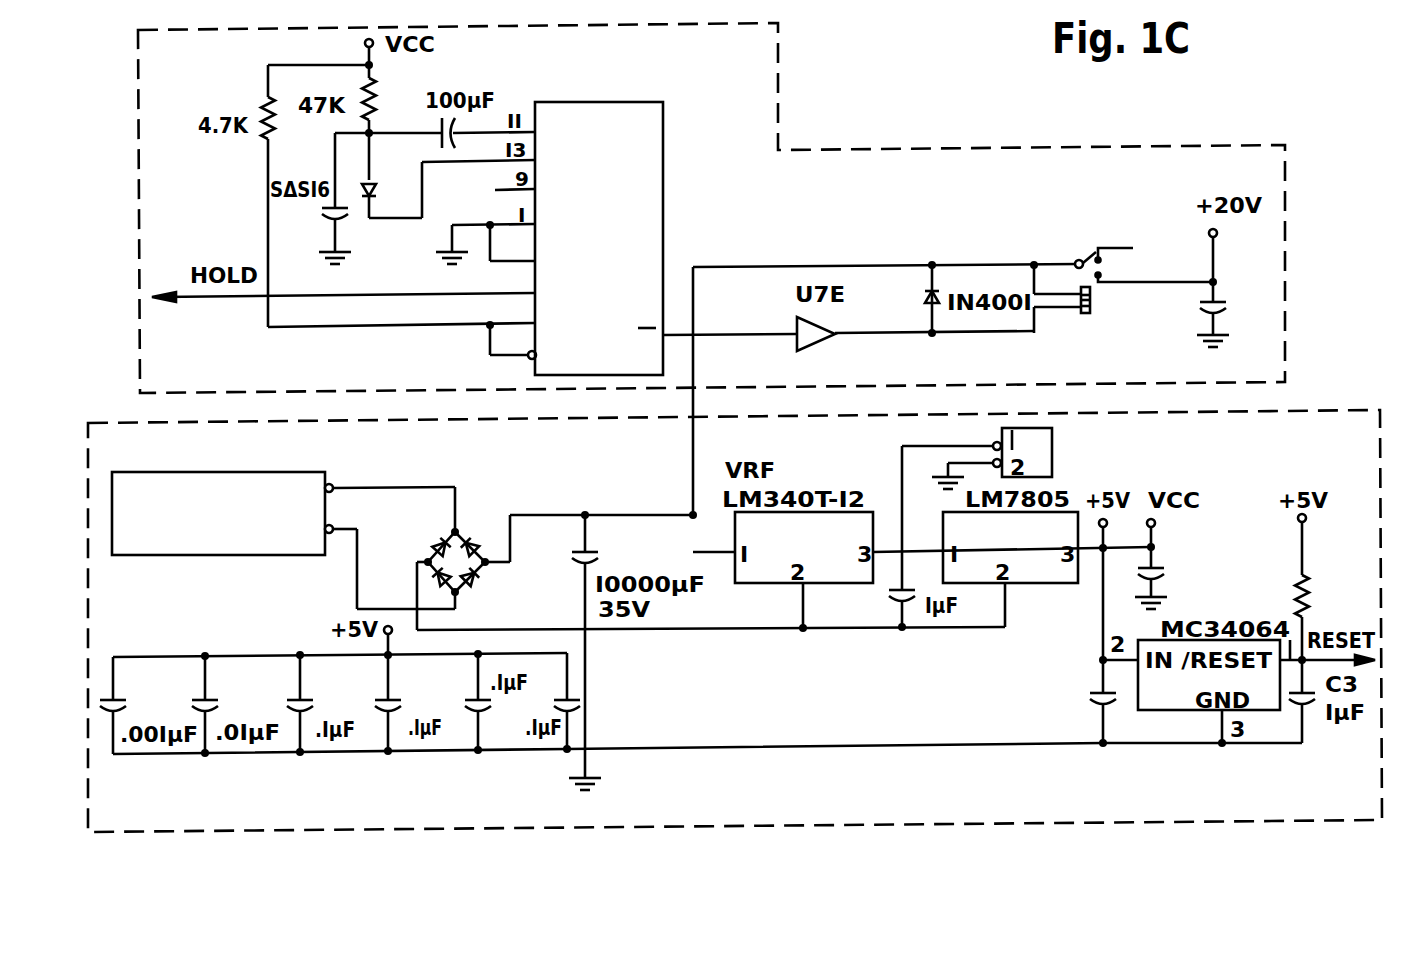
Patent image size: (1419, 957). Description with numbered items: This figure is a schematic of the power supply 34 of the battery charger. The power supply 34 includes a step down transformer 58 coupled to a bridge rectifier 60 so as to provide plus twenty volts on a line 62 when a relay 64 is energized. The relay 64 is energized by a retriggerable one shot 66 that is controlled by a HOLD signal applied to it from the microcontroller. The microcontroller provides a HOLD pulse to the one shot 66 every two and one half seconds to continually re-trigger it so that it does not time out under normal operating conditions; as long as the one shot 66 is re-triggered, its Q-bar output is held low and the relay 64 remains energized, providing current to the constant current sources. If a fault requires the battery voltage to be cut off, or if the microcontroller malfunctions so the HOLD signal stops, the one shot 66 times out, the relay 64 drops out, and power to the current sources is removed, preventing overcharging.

The power supply 34 is at (1302, 440).
The step down transformer 58 is at (198, 547).
The bridge rectifier 60 is at (472, 530).
The line 62 is at (1150, 284).
The relay 64 is at (1085, 330).
The retriggerable one shot 66 is at (643, 238).